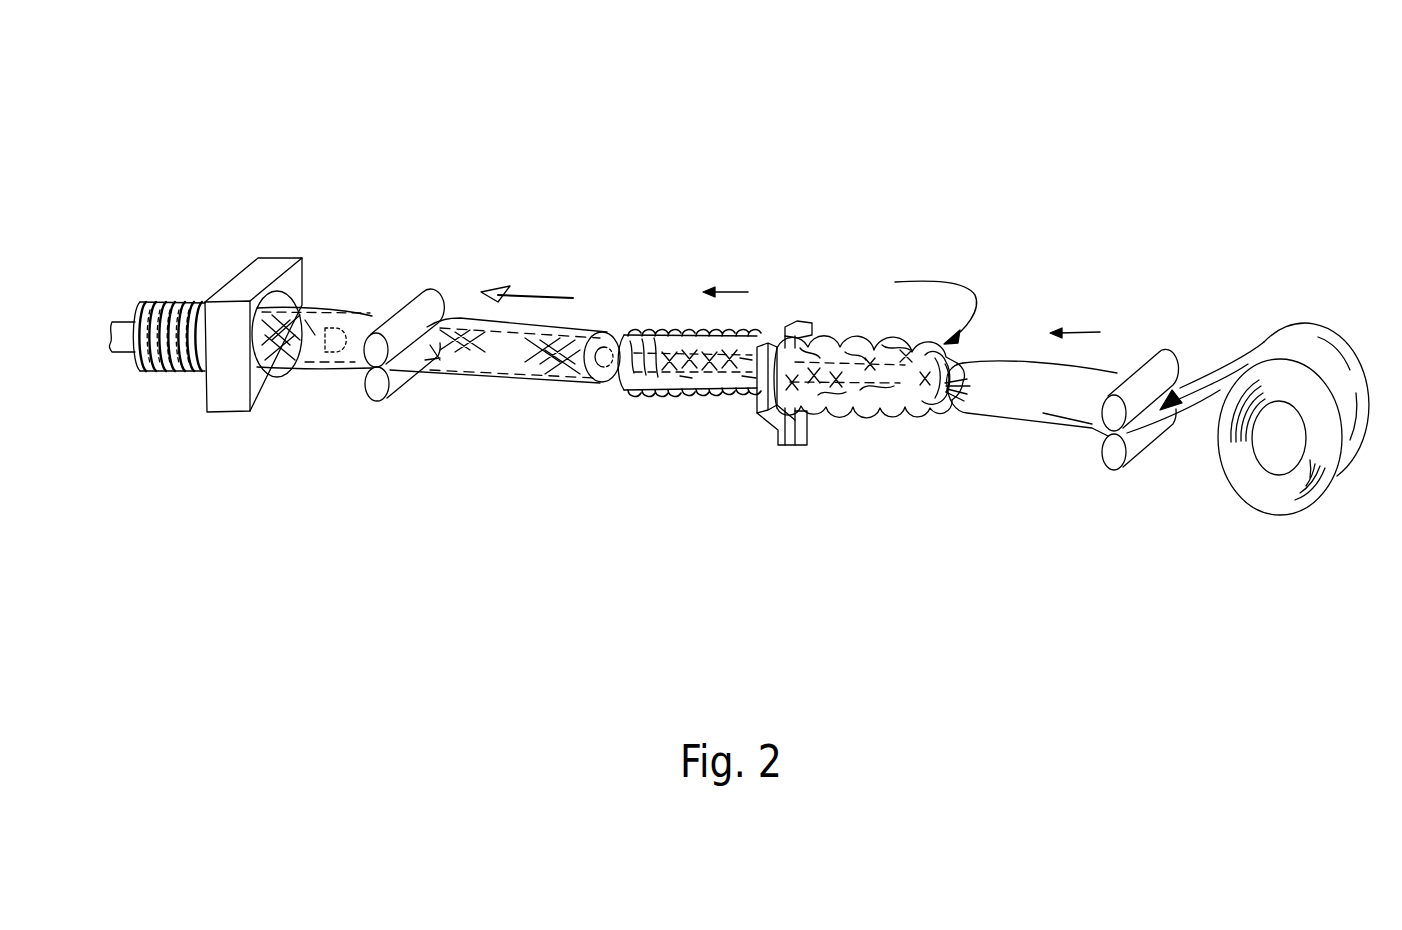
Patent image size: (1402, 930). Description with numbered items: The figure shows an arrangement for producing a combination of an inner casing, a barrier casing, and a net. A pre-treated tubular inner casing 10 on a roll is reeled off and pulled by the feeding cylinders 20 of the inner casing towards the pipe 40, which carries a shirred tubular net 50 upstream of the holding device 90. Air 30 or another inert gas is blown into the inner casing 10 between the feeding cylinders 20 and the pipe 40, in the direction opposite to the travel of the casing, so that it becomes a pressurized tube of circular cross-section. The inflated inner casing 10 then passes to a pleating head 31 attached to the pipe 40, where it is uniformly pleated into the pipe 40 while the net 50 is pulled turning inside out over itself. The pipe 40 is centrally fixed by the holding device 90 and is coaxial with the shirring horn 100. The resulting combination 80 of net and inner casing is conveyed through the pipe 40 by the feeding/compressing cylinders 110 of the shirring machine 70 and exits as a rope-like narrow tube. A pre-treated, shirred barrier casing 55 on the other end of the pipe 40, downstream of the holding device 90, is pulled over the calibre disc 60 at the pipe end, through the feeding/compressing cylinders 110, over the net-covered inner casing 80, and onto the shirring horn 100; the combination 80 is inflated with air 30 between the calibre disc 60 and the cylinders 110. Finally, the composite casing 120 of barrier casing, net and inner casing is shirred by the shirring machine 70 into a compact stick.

The tubular inner casing 10 is at (1313, 347).
The feeding cylinders 20 is at (1162, 365).
The air 30 is at (102, 333).
The pleating head 31 is at (927, 407).
The pipe 40 is at (842, 343).
The tubular net 50 is at (905, 343).
The barrier casing 55 is at (712, 350).
The calibre disc 60 is at (610, 333).
The shirring machine 70 is at (380, 392).
The net and inner casing combination 80 is at (533, 375).
The holding device 90 is at (807, 327).
The shirring horn 100 is at (317, 340).
The feeding/compressing cylinders 110 is at (410, 308).
The composite casing 120 is at (177, 303).